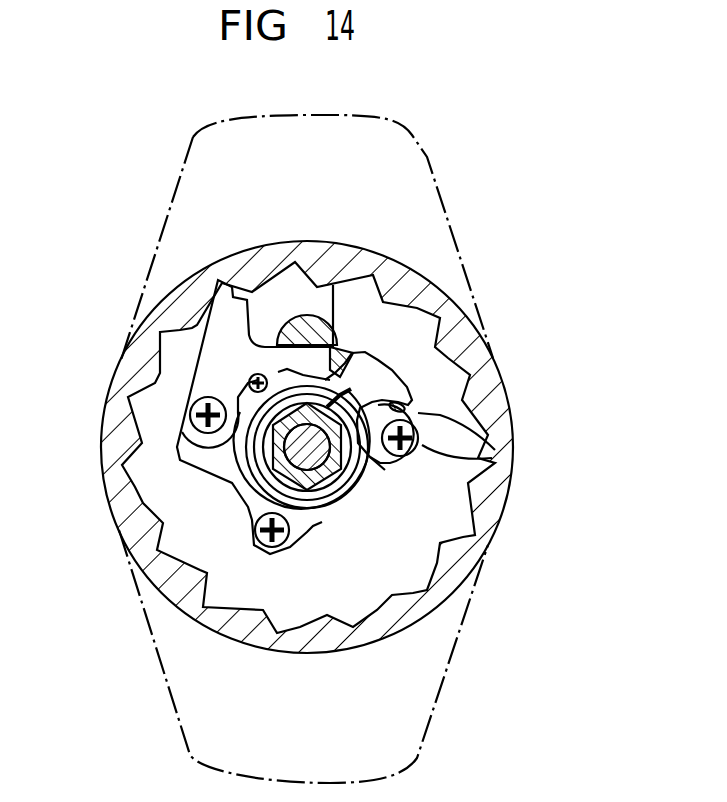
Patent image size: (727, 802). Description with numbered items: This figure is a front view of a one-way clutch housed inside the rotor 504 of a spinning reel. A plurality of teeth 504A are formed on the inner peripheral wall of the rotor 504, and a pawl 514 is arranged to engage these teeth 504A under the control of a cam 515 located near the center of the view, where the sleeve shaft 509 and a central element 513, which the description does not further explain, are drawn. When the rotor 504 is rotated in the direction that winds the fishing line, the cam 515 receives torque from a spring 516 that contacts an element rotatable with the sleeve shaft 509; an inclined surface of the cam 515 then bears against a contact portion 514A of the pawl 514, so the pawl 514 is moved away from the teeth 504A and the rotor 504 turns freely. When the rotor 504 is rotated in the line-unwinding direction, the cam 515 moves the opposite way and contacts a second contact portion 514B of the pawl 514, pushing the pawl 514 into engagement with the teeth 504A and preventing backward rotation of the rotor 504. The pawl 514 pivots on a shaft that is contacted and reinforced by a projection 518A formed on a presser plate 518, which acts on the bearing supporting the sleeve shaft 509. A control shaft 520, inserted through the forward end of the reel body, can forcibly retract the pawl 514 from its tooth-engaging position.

The rotor 504 is at (497, 480).
The teeth 504A is at (452, 377).
The sleeve shaft 509 is at (333, 487).
The shaft 513 is at (300, 468).
The pawl 514 is at (235, 295).
The contact portion 514A is at (452, 436).
The contact portion 514B is at (348, 346).
The cam 515 is at (377, 362).
The spring 516 is at (377, 455).
The presser plate 518 is at (307, 532).
The projection 518A is at (182, 448).
The control shaft 520 is at (308, 317).